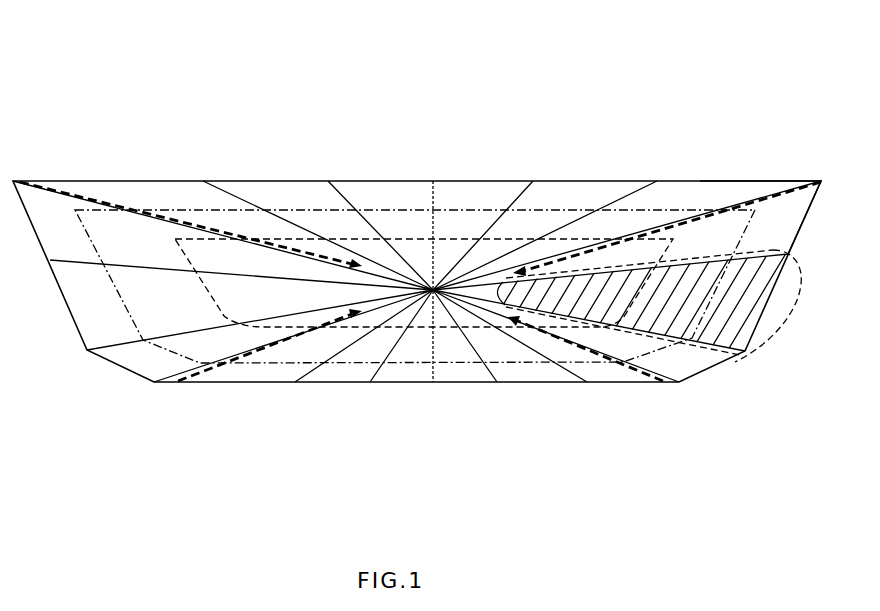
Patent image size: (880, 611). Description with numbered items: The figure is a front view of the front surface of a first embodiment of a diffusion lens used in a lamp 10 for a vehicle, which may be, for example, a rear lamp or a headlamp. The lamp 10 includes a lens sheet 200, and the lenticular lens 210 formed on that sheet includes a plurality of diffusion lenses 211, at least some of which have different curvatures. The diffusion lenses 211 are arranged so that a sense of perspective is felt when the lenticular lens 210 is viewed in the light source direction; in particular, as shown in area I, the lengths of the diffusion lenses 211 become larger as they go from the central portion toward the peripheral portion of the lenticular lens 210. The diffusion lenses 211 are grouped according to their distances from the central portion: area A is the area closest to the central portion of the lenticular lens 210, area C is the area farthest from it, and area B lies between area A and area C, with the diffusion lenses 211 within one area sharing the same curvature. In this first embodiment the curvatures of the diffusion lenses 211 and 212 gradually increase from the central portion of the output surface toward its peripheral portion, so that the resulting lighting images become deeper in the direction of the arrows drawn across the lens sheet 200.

The lamp for a vehicle 10 is at (40, 78).
The lens sheet 200 is at (342, 105).
The lenticular lens 210 is at (360, 193).
The diffusion lens 211 is at (590, 308).
The diffusion lens 212 is at (653, 307).
The area A is at (647, 243).
The area B is at (713, 222).
The area C is at (757, 186).
The area I is at (773, 251).